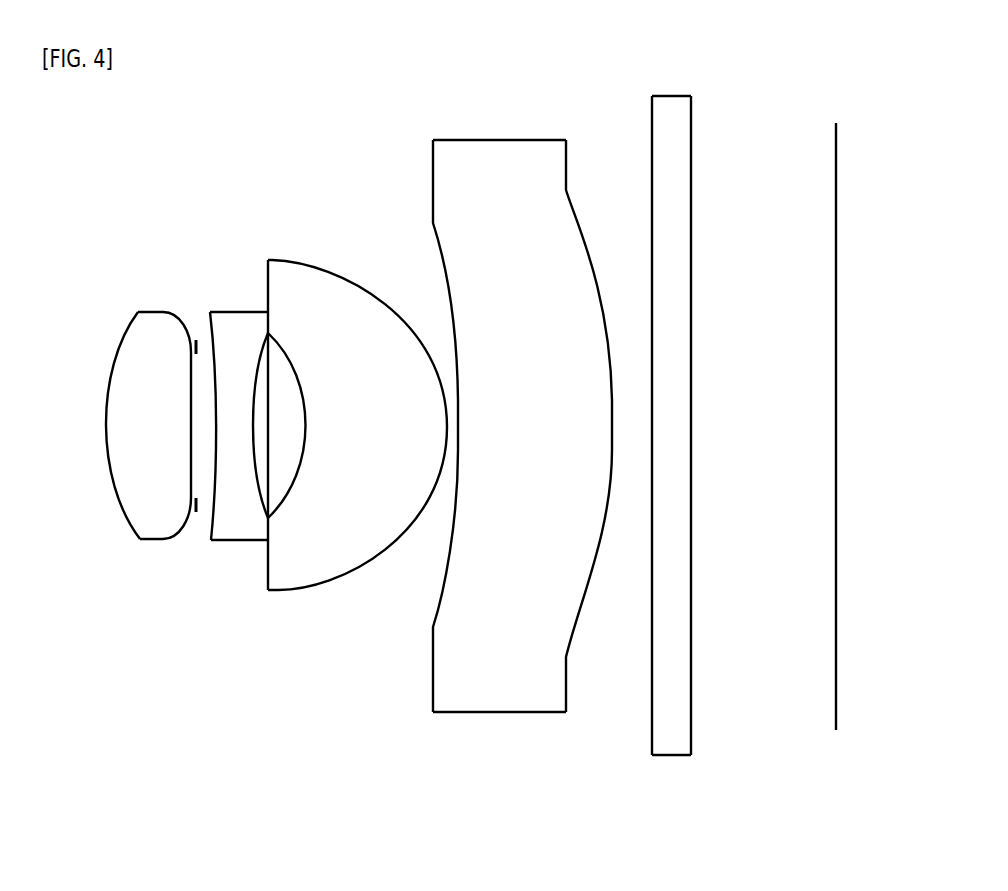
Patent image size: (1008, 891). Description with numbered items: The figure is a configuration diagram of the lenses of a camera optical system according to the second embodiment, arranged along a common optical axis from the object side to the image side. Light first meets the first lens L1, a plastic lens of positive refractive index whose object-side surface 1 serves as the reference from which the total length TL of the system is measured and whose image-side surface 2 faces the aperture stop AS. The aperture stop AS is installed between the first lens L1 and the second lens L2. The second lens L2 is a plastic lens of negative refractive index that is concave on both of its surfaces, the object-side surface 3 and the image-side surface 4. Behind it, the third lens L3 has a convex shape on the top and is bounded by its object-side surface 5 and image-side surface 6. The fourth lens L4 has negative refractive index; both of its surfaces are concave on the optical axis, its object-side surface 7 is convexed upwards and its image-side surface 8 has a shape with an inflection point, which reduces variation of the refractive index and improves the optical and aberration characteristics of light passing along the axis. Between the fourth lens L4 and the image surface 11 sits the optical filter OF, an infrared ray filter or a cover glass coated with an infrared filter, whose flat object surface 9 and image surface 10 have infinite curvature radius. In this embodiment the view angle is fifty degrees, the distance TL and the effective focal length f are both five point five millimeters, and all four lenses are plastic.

The object-side surface 1 is at (115, 362).
The image-side surface of the first lens 2 is at (140, 320).
The object-side surface of the second lens 3 is at (192, 352).
The image-side surface of the second lens 4 is at (212, 372).
The object-side surface of the third lens 5 is at (258, 350).
The image-side surface of the third lens 6 is at (380, 307).
The object-side surface 7 is at (437, 256).
The image-side surface 8 is at (577, 213).
The object surface 9 is at (650, 125).
The image surface 10 is at (692, 125).
The image surface 11 is at (837, 172).
The first lens L1 is at (115, 431).
The second lens L2 is at (206, 426).
The third lens L3 is at (321, 452).
The fourth lens L4 is at (508, 464).
The aperture stop AS is at (198, 510).
The optical filter OF is at (674, 459).